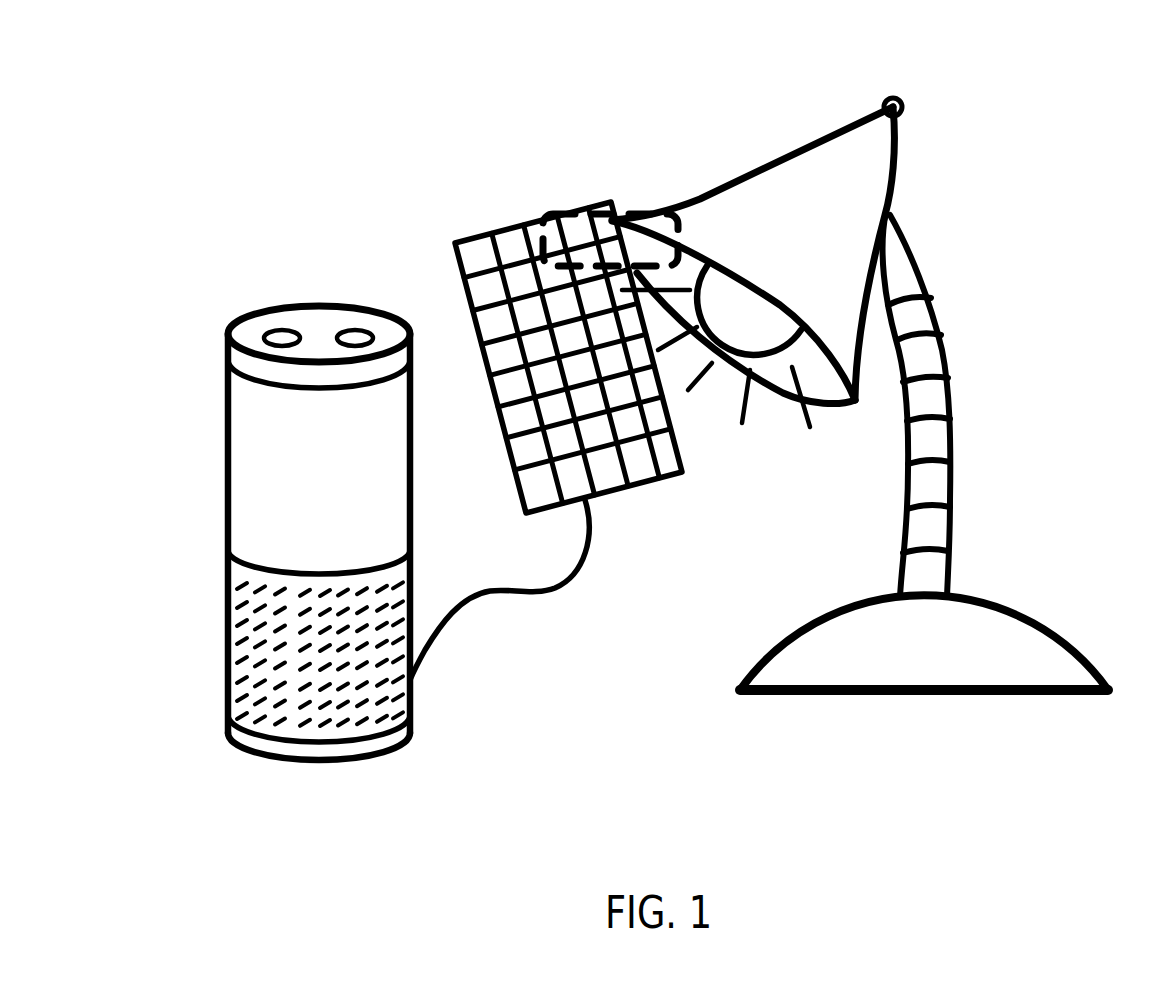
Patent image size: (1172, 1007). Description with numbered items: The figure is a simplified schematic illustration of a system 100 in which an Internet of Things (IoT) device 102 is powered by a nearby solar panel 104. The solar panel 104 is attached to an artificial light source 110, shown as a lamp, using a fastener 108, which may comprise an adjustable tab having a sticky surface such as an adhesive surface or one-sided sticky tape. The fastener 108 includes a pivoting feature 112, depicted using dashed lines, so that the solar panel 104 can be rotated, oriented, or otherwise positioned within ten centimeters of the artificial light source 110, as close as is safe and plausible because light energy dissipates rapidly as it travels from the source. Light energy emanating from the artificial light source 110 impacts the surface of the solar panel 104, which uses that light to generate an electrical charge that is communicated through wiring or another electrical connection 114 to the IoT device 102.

The system 100 is at (1073, 78).
The Internet of Things (IoT) device 102 is at (250, 428).
The solar panel 104 is at (622, 485).
The fastener 108 is at (628, 277).
The artificial light source 110 is at (998, 630).
The pivoting feature 112 is at (558, 213).
The electrical connection 114 is at (525, 598).